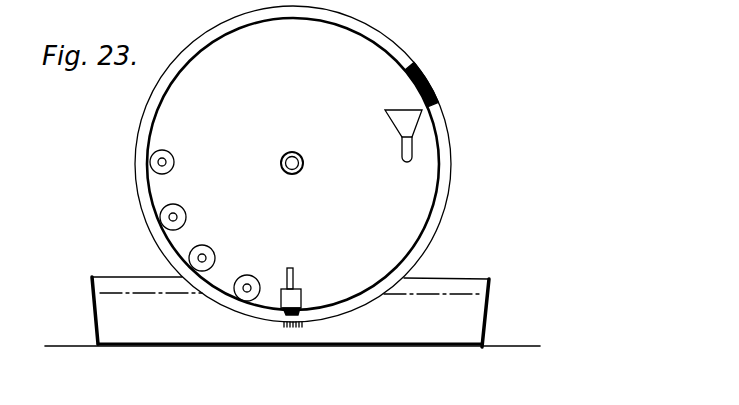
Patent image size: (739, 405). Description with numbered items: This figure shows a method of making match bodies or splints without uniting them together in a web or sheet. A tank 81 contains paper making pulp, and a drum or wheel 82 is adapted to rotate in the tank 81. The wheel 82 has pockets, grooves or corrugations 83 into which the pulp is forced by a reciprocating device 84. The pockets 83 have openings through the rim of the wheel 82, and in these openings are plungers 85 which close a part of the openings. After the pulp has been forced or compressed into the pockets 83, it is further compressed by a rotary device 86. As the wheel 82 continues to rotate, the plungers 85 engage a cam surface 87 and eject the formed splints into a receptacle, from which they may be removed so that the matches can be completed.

The tank 81 is at (92, 302).
The drum or wheel 82 is at (143, 212).
The pockets, grooves or corrugations 83 is at (304, 312).
The reciprocating device 84 is at (294, 279).
The plungers 85 is at (303, 322).
The rotary device 86 is at (185, 219).
The cam surface 87 is at (432, 100).